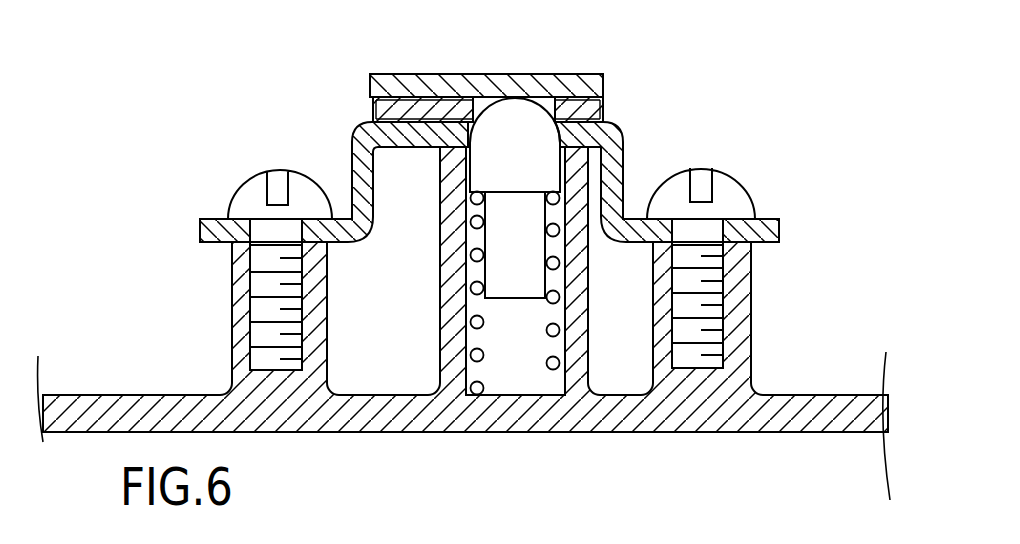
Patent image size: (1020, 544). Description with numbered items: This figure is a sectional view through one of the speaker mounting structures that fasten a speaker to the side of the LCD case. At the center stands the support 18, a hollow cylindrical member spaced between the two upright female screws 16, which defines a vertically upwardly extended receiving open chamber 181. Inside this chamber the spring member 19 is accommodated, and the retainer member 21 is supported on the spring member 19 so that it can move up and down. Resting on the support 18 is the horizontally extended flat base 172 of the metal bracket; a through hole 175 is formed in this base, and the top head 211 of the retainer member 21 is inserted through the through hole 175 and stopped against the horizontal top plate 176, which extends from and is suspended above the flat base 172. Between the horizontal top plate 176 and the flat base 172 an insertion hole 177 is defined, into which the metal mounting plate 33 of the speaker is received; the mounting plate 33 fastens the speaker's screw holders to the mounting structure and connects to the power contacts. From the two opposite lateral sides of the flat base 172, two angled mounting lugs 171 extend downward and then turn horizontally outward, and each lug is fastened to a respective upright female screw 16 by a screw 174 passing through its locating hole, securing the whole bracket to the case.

The upright female screw 16 is at (733, 307).
The support 18 is at (580, 328).
The spring member 19 is at (466, 320).
The retainer member 21 is at (505, 247).
The top head 211 is at (500, 157).
The metal mounting plate 33 is at (373, 100).
The angled mounting lug 171 is at (755, 228).
The horizontally extended flat base 172 is at (370, 130).
The screw 174 is at (727, 200).
The through hole 175 is at (537, 143).
The horizontal top plate 176 is at (398, 85).
The insertion hole 177 is at (440, 108).
The receiving open chamber 181 is at (513, 338).